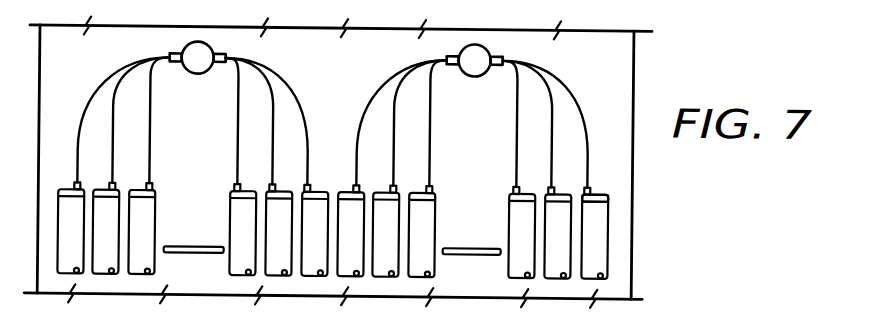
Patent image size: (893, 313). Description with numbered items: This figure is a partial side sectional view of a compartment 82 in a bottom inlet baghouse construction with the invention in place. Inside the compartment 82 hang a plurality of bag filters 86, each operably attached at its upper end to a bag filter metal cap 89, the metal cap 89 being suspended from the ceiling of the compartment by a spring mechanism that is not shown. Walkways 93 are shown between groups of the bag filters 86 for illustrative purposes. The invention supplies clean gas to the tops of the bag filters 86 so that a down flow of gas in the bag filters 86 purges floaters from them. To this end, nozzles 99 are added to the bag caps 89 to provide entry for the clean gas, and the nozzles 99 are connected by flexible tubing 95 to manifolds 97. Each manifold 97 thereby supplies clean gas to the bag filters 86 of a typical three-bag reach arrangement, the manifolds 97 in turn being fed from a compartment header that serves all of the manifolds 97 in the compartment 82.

The compartment 82 is at (312, 26).
The bag filter 86 is at (233, 225).
The bag filter metal cap 89 is at (610, 189).
The walkway 93 is at (213, 252).
The flexible tubing 95 is at (305, 127).
The manifold 97 is at (183, 49).
The nozzle 99 is at (237, 181).